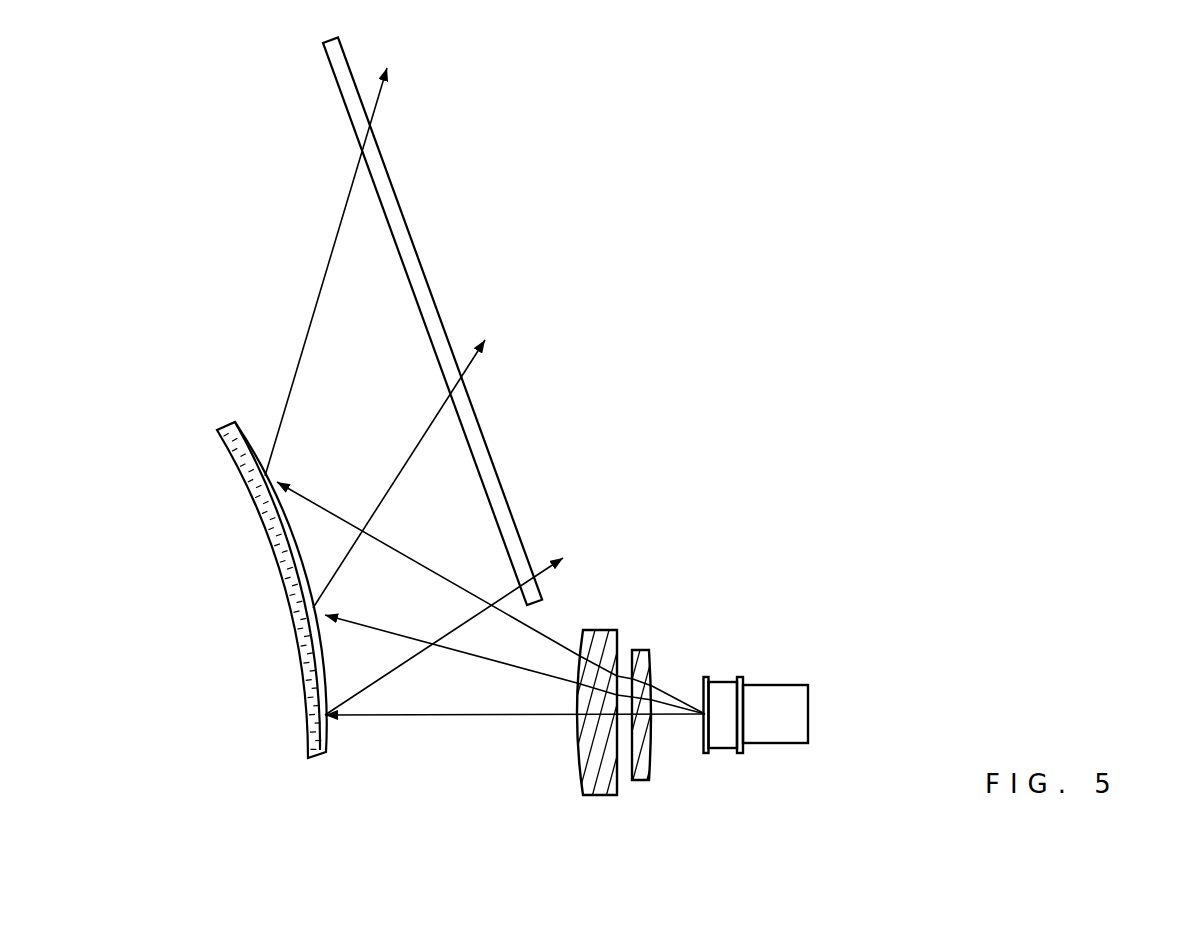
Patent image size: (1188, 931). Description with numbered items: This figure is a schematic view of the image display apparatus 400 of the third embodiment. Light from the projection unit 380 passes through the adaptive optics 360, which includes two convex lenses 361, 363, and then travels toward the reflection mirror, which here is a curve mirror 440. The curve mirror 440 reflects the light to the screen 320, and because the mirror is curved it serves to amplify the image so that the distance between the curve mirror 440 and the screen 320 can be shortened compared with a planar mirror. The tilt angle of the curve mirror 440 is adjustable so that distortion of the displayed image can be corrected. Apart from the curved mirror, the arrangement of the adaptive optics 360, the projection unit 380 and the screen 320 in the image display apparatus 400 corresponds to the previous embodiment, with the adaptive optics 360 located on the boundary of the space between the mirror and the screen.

The screen 320 is at (335, 48).
The adaptive optics 360 is at (611, 631).
The convex lens 361 is at (641, 650).
The convex lens 363 is at (606, 630).
The projection unit 380 is at (774, 698).
The image display apparatus 400 is at (855, 195).
The curve mirror 440 is at (318, 758).